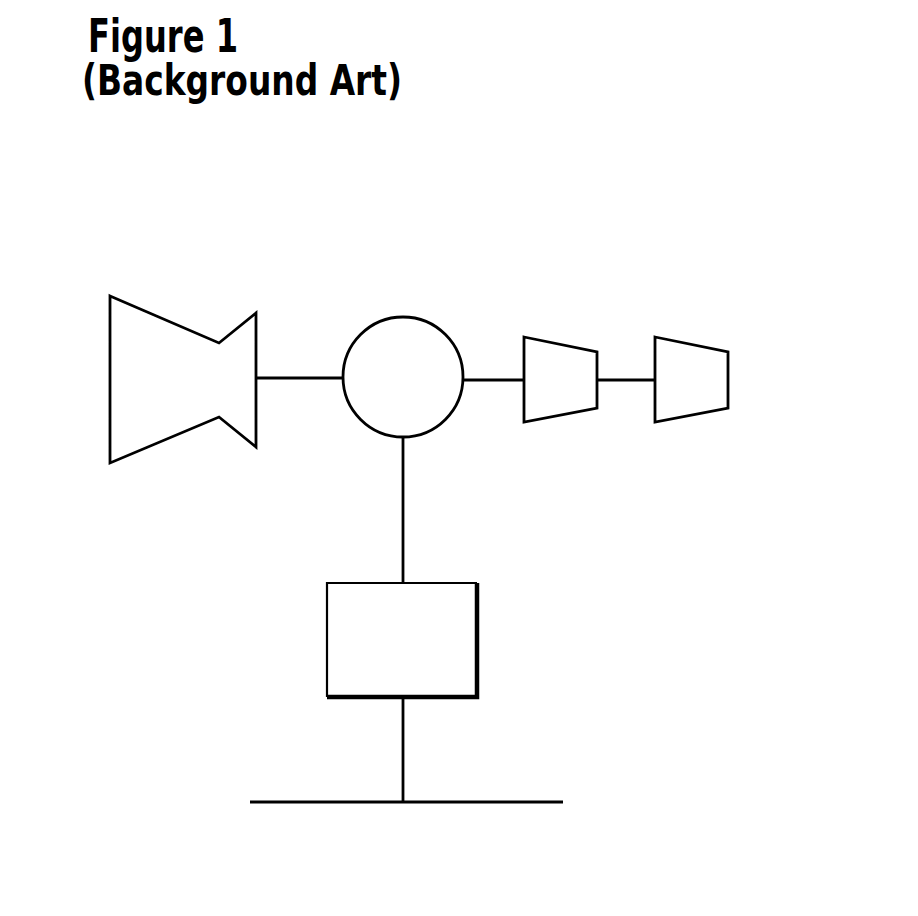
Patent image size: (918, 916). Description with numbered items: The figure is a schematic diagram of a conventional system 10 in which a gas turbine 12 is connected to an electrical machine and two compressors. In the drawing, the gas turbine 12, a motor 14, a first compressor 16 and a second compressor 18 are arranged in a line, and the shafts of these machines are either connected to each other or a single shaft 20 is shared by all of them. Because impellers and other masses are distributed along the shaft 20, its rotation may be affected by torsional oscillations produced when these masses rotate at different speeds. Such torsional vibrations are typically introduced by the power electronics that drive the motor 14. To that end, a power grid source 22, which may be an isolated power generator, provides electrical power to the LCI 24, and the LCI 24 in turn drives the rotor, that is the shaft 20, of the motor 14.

The system 10 is at (432, 207).
The gas turbine 12 is at (158, 443).
The motor 14 is at (432, 430).
The first compressor 16 is at (565, 414).
The second compressor 18 is at (702, 414).
The shaft 20 is at (300, 378).
The power grid source 22 is at (507, 802).
The LCI 24 is at (478, 645).